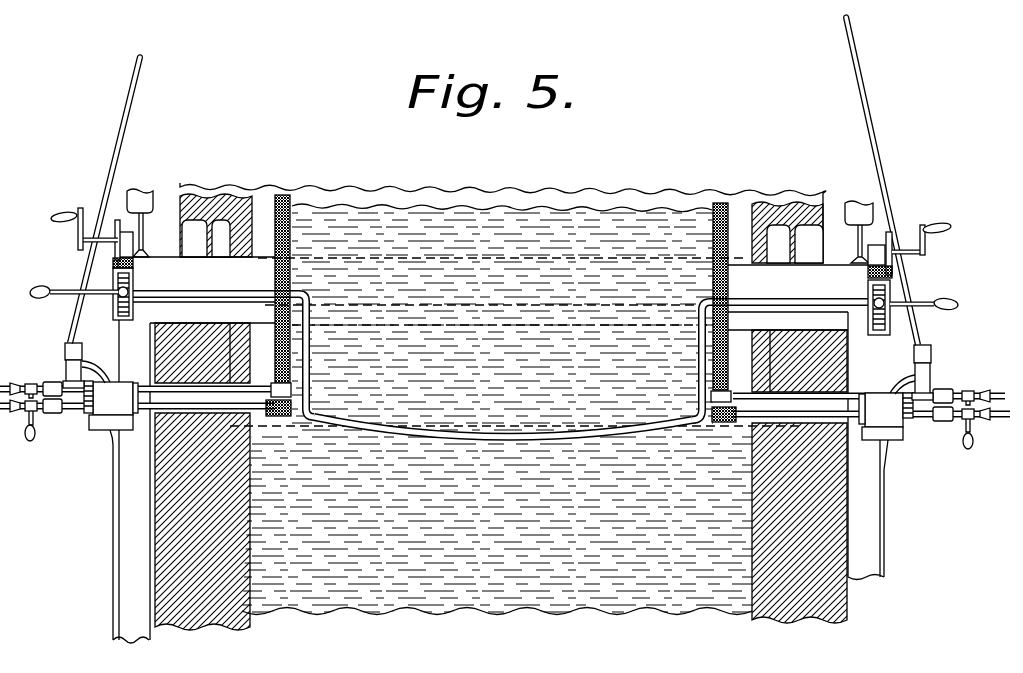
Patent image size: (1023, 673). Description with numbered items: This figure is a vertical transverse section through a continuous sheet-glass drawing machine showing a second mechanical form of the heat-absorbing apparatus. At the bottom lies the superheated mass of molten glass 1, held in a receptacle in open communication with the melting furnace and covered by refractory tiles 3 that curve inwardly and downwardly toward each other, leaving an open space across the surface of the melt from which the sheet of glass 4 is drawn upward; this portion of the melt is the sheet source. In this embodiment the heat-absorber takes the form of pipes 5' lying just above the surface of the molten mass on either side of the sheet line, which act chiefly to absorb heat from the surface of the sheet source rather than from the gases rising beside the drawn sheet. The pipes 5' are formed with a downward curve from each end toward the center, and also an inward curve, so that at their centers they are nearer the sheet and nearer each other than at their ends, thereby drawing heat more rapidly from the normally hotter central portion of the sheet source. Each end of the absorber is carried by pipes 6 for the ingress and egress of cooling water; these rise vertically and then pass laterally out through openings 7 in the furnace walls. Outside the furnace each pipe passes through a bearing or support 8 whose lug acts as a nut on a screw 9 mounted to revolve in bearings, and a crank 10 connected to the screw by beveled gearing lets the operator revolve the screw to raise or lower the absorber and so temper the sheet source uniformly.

The mass of molten glass 1 is at (450, 597).
The tiles 3 is at (501, 412).
The sheet of glass 4 is at (398, 208).
The pipes 5' is at (503, 410).
The pipes 6 is at (213, 292).
The openings 7 is at (493, 293).
The bearing or support 8 is at (125, 294).
The screw 9 is at (134, 281).
The crank 10 is at (54, 221).